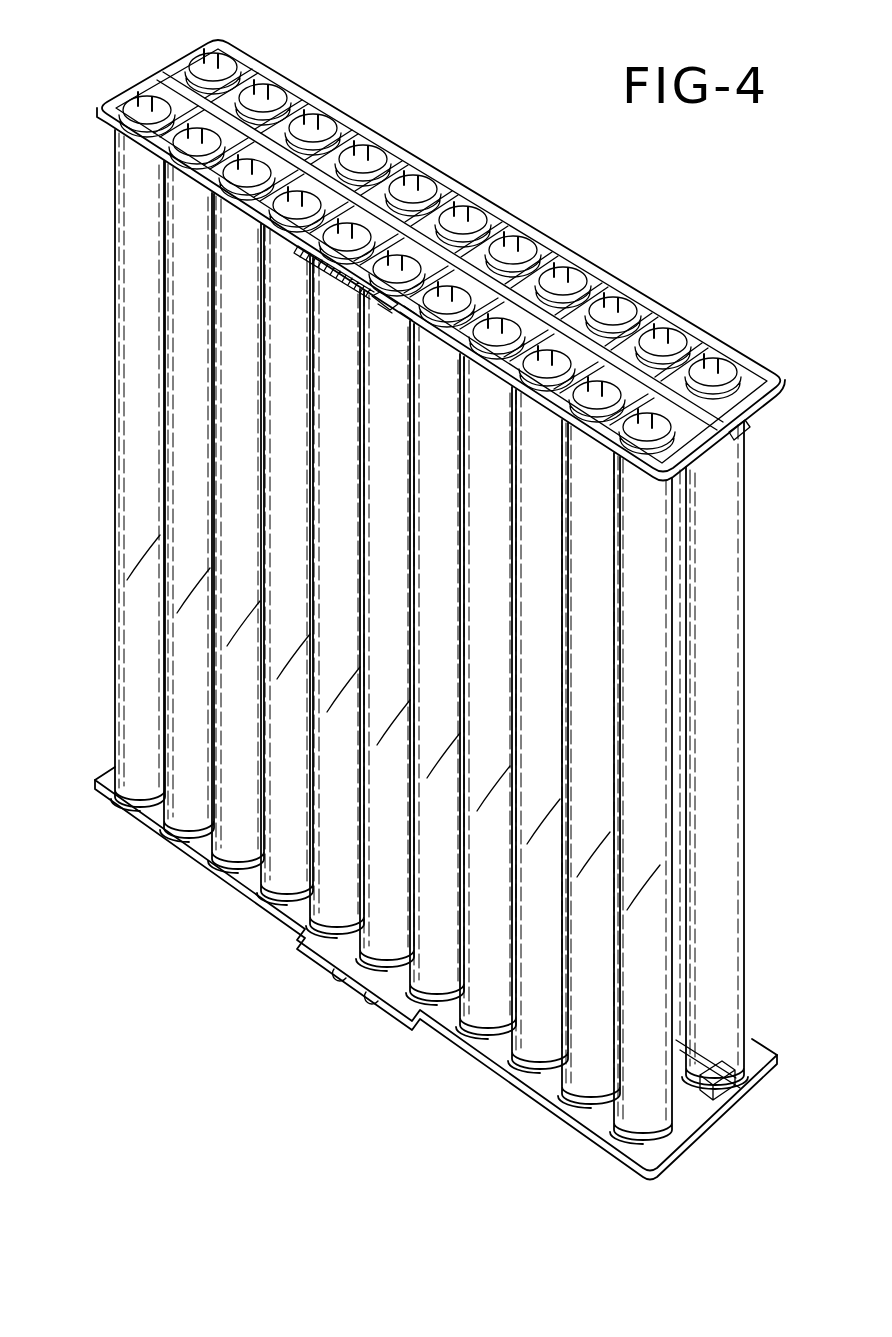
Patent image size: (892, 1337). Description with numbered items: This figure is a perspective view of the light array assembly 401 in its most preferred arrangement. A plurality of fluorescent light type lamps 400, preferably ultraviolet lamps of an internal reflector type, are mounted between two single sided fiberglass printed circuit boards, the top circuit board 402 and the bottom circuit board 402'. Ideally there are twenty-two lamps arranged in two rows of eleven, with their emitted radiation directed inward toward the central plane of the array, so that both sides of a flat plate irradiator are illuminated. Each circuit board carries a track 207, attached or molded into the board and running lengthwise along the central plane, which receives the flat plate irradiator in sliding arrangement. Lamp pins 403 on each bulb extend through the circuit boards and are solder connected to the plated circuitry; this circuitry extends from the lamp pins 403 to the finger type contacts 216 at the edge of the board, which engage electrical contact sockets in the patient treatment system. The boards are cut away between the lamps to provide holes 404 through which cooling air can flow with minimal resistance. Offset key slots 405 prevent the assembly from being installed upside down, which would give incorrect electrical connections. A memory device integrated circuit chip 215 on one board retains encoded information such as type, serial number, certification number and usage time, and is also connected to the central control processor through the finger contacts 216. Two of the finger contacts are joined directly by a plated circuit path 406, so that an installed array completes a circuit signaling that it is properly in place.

The fluorescent light type lamps 400 is at (230, 340).
The battery pack assembly 401 is at (728, 248).
The top circuit board 402 is at (440, 245).
The bottom circuit board 402' is at (436, 973).
The lamp pins 403 is at (282, 92).
The holes 404 is at (372, 178).
The offset key slots 405 is at (380, 300).
The plated circuit path 406 is at (378, 300).
The memory device integrated circuit chip 215 is at (310, 250).
The finger type contacts 216 is at (405, 320).
The tracks 207 is at (737, 430).